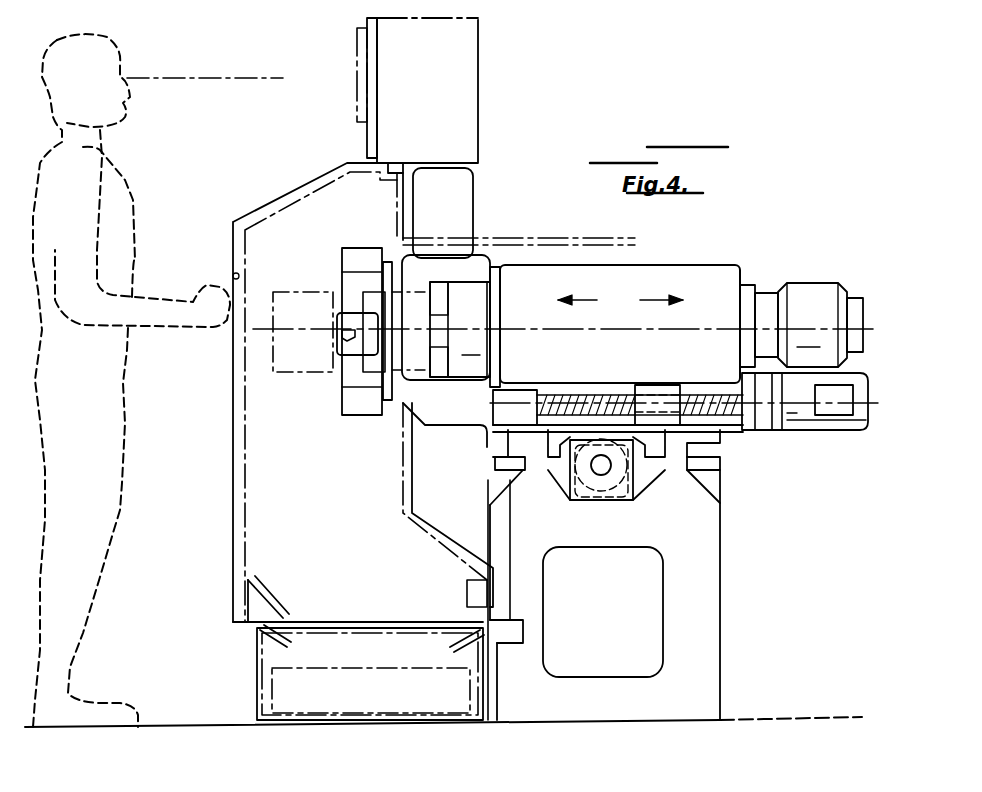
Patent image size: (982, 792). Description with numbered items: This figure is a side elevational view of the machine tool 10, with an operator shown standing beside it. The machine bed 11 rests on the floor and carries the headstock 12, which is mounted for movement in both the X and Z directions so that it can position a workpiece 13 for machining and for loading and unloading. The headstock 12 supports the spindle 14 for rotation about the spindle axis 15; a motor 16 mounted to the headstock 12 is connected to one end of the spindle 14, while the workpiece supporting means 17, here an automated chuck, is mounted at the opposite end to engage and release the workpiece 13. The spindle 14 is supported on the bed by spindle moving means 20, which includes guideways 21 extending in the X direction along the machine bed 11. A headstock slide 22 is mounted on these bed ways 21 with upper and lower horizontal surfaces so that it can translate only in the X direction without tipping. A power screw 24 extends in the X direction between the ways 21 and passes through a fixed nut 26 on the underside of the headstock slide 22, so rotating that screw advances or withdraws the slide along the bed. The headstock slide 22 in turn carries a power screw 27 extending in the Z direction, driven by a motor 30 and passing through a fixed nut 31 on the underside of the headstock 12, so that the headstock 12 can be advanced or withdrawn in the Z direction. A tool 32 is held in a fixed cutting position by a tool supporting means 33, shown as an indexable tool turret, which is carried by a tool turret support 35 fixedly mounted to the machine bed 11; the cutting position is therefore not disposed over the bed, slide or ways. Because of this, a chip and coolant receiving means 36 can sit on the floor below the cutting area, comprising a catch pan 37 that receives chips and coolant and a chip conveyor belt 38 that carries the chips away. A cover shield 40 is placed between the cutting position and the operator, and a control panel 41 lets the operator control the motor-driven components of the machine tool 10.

The machine tool 10 is at (330, 220).
The machine bed 11 is at (710, 580).
The headstock 12 is at (652, 268).
The workpiece 13 is at (273, 357).
The spindle 14 is at (492, 303).
The spindle axis 15 is at (722, 330).
The motor 16 is at (817, 285).
The workpiece supporting means 17 is at (440, 283).
The spindle moving means 20 is at (728, 462).
The guideways 21 is at (523, 452).
The headstock slide 22 is at (497, 447).
The power screw 24 is at (601, 465).
The fixed nut 26 is at (623, 495).
The power screw 27 is at (560, 390).
The motor 30 is at (807, 418).
The fixed nut 31 is at (642, 390).
The tool 32 is at (350, 330).
The tool supporting means 33 is at (357, 397).
The tool turret support 35 is at (423, 420).
The chip and coolant receiving means 36 is at (250, 653).
The catch pan 37 is at (290, 633).
The chip conveyor belt 38 is at (385, 673).
The cover shield 40 is at (248, 213).
The control panel 41 is at (458, 67).